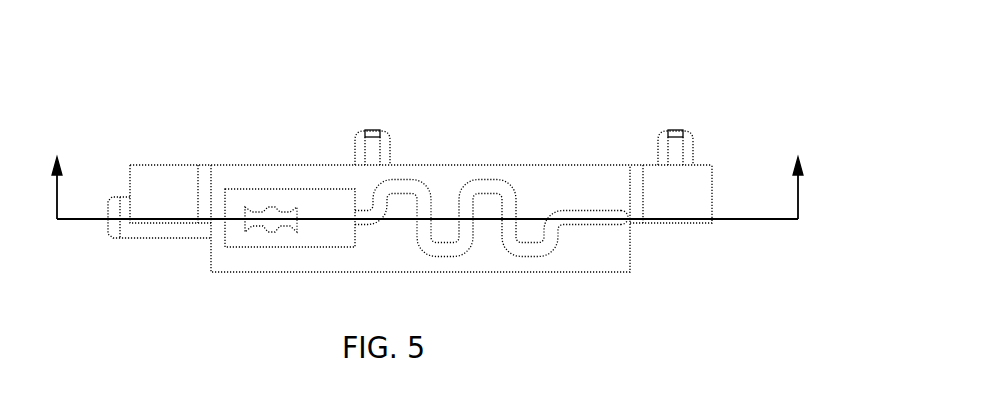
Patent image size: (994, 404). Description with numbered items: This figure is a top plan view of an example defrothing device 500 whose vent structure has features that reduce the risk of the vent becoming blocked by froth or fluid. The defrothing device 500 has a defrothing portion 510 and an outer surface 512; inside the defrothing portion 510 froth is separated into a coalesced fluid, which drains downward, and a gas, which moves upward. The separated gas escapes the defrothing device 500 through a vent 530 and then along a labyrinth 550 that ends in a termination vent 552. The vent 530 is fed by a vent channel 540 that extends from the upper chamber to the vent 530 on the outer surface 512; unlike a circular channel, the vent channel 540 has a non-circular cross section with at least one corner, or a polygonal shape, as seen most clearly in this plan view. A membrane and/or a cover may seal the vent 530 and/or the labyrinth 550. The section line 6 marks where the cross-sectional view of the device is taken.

The defrothing device 500 is at (698, 93).
The defrothing portion 510 is at (630, 235).
The outer surface 512 is at (562, 182).
The vent 530 is at (324, 200).
The vent channel 540 is at (267, 211).
The labyrinth 550 is at (490, 185).
The termination vent 552 is at (620, 220).
The section line 6- 6 is at (428, 168).